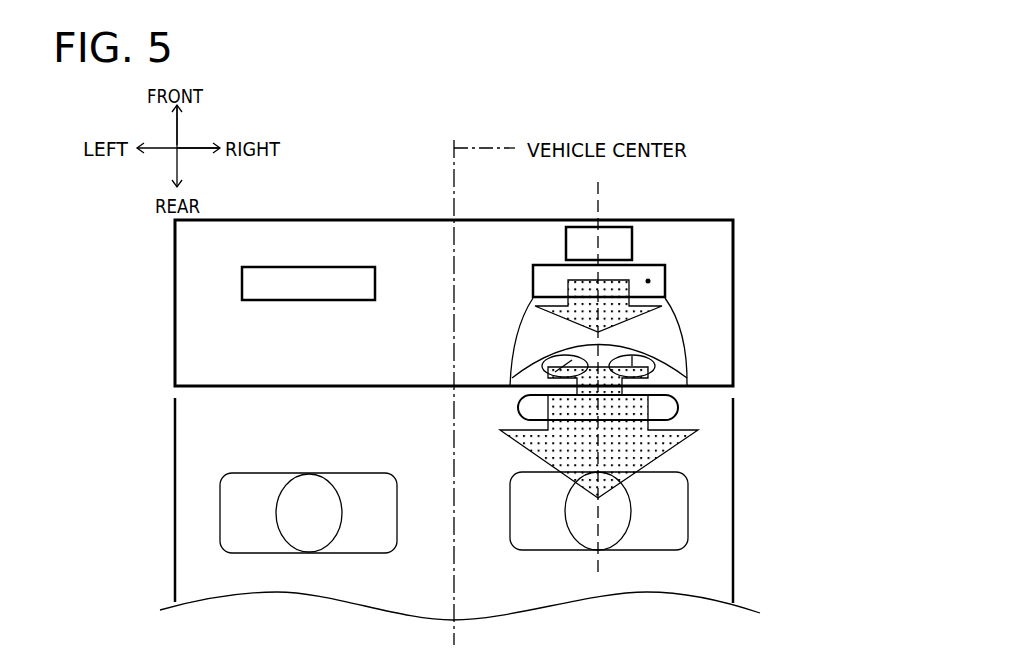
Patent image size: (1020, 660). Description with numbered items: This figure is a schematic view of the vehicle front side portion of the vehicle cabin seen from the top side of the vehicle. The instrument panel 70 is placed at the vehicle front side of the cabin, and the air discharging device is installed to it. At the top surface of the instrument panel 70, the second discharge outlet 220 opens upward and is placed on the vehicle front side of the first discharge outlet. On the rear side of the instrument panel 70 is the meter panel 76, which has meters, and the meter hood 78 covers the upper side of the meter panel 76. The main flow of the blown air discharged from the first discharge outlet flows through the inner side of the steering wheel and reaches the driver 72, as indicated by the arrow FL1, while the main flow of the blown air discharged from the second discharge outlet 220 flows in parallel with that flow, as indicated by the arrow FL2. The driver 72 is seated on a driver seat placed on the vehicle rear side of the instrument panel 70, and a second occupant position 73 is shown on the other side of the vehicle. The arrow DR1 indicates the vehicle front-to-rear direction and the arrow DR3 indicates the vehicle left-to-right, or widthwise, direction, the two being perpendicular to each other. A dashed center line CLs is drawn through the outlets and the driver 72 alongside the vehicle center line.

The instrument panel 70 is at (712, 243).
The second discharge outlet 220 is at (648, 281).
The arrow FL2 is at (667, 300).
The meter hood 78 is at (667, 338).
The meter panel 76 is at (665, 368).
The arrow FL1 is at (680, 447).
The driver 72 is at (677, 533).
The left lamp 73 is at (237, 514).
The vehicle front-to-rear direction DR1 is at (177, 125).
The vehicle left-to-right direction DR3 is at (193, 147).
The lamp center line CLs is at (598, 190).